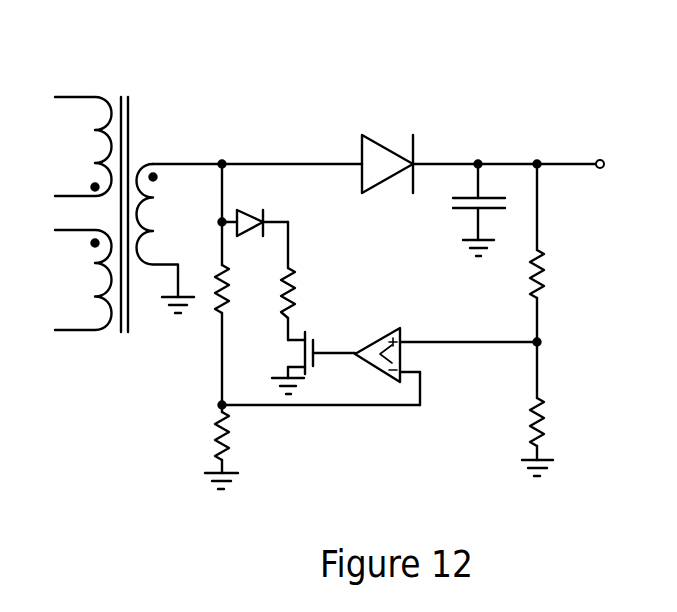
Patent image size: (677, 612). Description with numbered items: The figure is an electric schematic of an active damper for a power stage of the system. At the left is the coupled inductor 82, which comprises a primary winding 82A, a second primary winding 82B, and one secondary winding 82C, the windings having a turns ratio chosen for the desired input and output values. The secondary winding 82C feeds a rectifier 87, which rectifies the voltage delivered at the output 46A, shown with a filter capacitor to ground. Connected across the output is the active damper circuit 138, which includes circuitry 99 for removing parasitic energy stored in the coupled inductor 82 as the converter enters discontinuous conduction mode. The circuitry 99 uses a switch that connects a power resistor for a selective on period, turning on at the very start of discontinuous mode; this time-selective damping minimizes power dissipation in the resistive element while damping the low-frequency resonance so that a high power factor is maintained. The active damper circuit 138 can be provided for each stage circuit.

The coupled inductor 82 is at (141, 209).
The primary winding 82A is at (78, 97).
The primary winding 82B is at (80, 330).
The secondary winding 82C is at (157, 163).
The rectifier 87 is at (376, 141).
The output 46A is at (590, 160).
The active damper circuit 138 is at (602, 275).
The circuitry for removing parasitic energy 99 is at (360, 424).